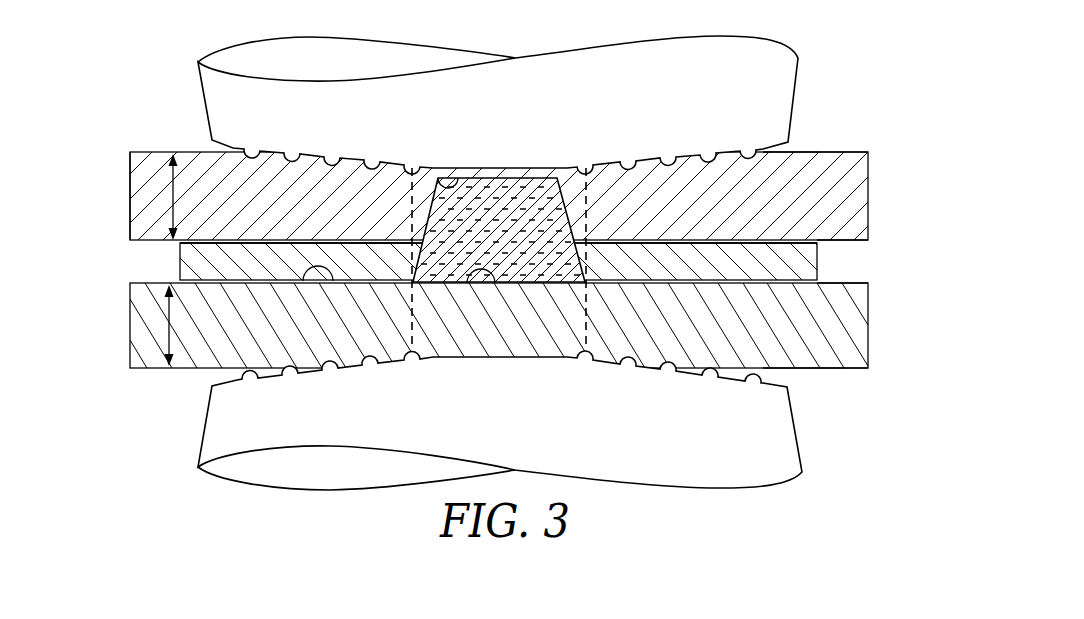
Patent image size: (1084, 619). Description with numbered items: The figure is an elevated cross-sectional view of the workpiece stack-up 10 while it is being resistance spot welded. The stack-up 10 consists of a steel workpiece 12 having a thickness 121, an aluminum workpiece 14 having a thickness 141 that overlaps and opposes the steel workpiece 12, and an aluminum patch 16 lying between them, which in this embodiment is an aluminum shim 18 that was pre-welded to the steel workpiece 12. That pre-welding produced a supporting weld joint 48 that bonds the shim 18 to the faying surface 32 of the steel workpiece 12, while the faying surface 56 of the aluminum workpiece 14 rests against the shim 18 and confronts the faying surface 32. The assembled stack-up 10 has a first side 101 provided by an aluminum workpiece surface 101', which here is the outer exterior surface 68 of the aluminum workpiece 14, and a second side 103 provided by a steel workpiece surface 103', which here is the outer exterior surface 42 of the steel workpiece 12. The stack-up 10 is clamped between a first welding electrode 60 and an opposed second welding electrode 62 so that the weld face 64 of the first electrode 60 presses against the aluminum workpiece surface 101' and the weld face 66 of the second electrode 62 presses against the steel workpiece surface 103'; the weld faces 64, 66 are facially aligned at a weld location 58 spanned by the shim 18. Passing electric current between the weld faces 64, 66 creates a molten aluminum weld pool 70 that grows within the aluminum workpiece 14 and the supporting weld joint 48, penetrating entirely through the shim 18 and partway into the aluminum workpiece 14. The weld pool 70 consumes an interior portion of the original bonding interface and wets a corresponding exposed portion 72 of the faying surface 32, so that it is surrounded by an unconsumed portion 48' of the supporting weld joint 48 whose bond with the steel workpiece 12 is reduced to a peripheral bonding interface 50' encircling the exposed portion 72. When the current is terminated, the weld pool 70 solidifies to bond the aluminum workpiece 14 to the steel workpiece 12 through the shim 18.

The workpiece stack-up 10 is at (117, 141).
The steel workpiece 12 is at (140, 322).
The aluminum workpiece 14 is at (140, 183).
The aluminum patch 16 is at (170, 247).
The aluminum shim 18 is at (200, 257).
The faying surface of the steel workpiece 32 is at (852, 283).
The outer exterior surface of the steel workpiece 42 is at (794, 370).
The supporting weld joint 48 is at (296, 217).
The unconsumed portion of the supporting weld joint 48' is at (702, 220).
The peripheral bonding interface 50' is at (288, 288).
The faying surface of the aluminum workpiece 56 is at (840, 243).
The weld location 58 is at (586, 322).
The first welding electrode 60 is at (347, 142).
The second welding electrode 62 is at (347, 424).
The weld face of the first welding electrode 64 is at (433, 174).
The weld face of the second welding electrode 66 is at (480, 345).
The outer exterior surface of the aluminum workpiece 68 is at (850, 151).
The molten aluminum weld pool 70 is at (508, 218).
The exposed portion of the faying surface 72 is at (497, 280).
The first side of the workpiece stack-up 101 is at (810, 103).
The aluminum workpiece surface 101' is at (864, 114).
The second side of the workpiece stack-up 103 is at (848, 422).
The steel workpiece surface 103' is at (885, 407).
The thickness of the steel workpiece 121 is at (160, 342).
The thickness of the aluminum workpiece 141 is at (173, 200).